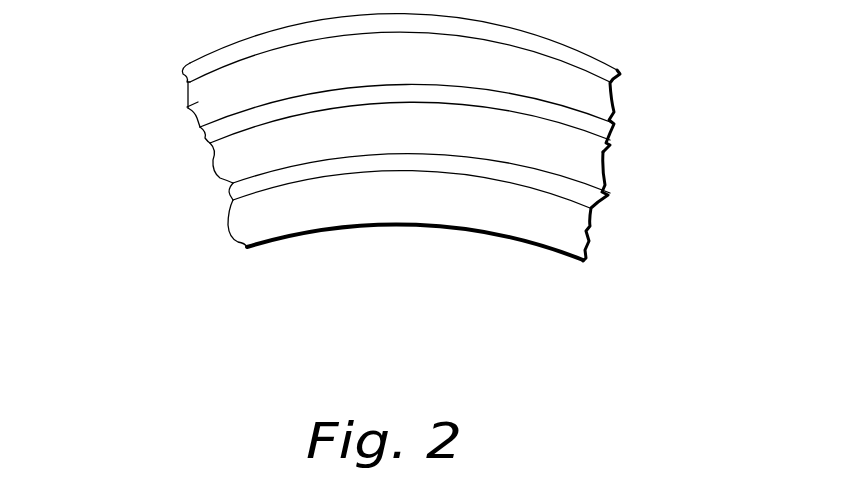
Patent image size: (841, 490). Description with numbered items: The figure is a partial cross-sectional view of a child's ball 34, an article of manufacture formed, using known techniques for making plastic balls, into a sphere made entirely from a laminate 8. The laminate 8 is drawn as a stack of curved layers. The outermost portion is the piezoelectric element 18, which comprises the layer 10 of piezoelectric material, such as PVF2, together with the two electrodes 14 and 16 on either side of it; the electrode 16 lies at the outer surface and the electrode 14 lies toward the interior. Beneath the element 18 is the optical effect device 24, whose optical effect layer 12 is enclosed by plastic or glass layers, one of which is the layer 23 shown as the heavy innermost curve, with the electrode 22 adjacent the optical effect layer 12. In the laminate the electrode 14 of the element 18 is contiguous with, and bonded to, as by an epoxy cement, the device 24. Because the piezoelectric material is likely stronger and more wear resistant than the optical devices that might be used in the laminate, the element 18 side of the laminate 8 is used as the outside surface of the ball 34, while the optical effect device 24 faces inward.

The laminate 8 is at (720, 217).
The piezoelectric material layer 10 is at (188, 108).
The optical effect layer 12 is at (232, 173).
The electrode 14 is at (217, 128).
The electrode 16 is at (190, 66).
The piezoelectric element 18 is at (643, 90).
The electrode 22 is at (215, 200).
The plastic or glass layer 23 is at (262, 218).
The optical effect device 24 is at (628, 160).
The child's ball 34 is at (85, 187).